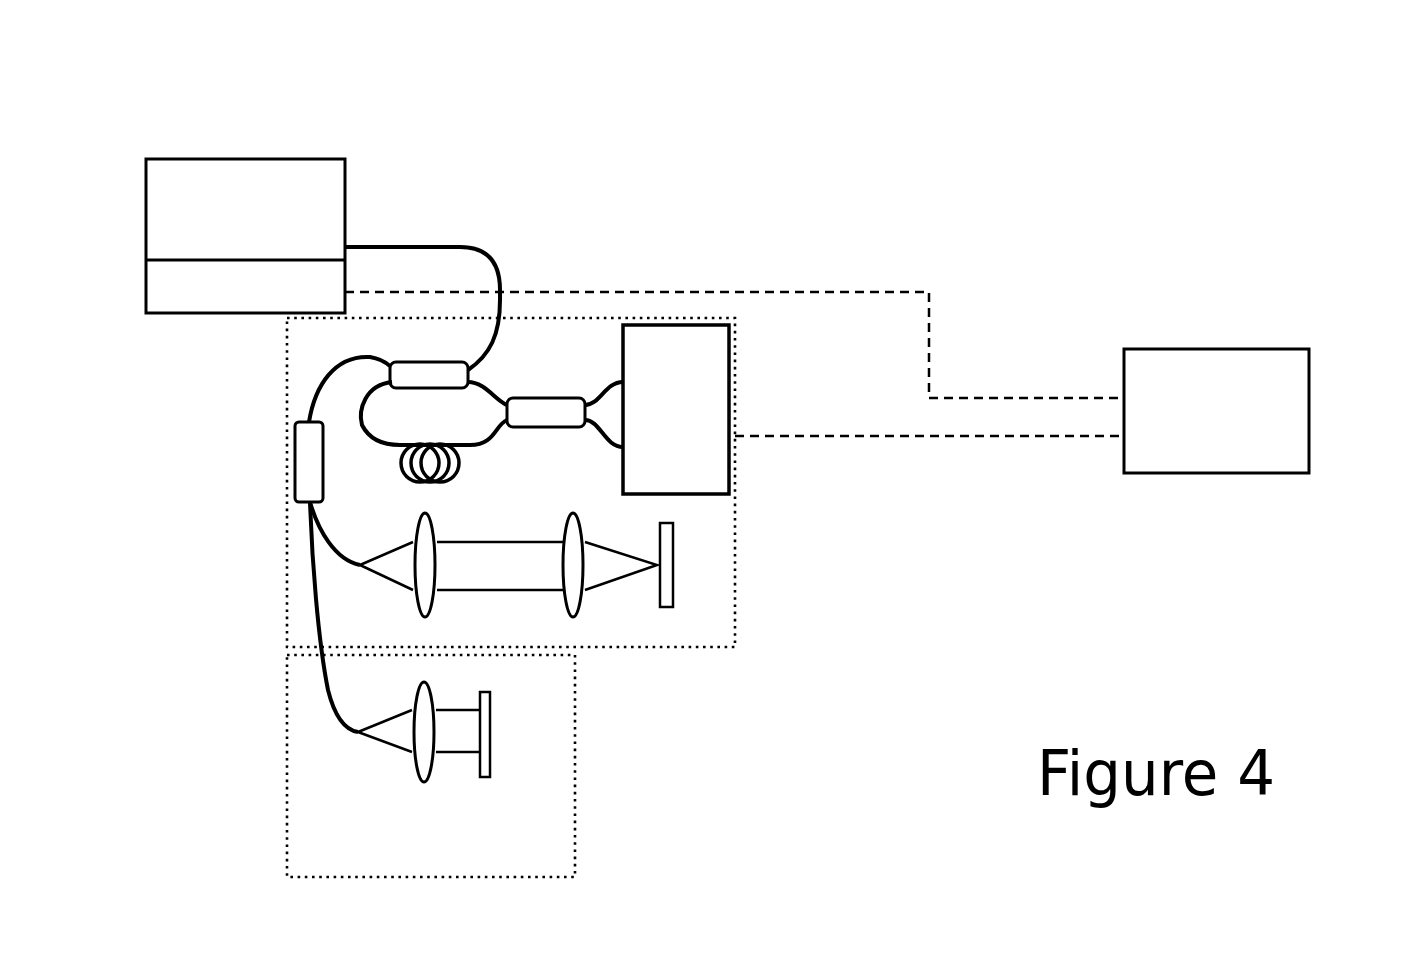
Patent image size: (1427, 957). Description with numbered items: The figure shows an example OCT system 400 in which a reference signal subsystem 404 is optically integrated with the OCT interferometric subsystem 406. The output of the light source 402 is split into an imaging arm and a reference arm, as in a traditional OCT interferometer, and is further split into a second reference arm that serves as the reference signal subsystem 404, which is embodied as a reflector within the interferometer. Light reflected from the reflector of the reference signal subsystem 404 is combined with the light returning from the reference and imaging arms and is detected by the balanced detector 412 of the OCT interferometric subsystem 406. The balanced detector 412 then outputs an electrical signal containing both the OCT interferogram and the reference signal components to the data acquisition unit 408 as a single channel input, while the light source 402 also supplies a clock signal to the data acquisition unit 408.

The OCT system 400 is at (940, 172).
The light source 402 is at (237, 159).
The reference signal subsystem 404 is at (580, 764).
The OCT interferometric subsystem 406 is at (735, 621).
The data acquisition unit 408 is at (1222, 349).
The balanced detector 412 is at (726, 497).